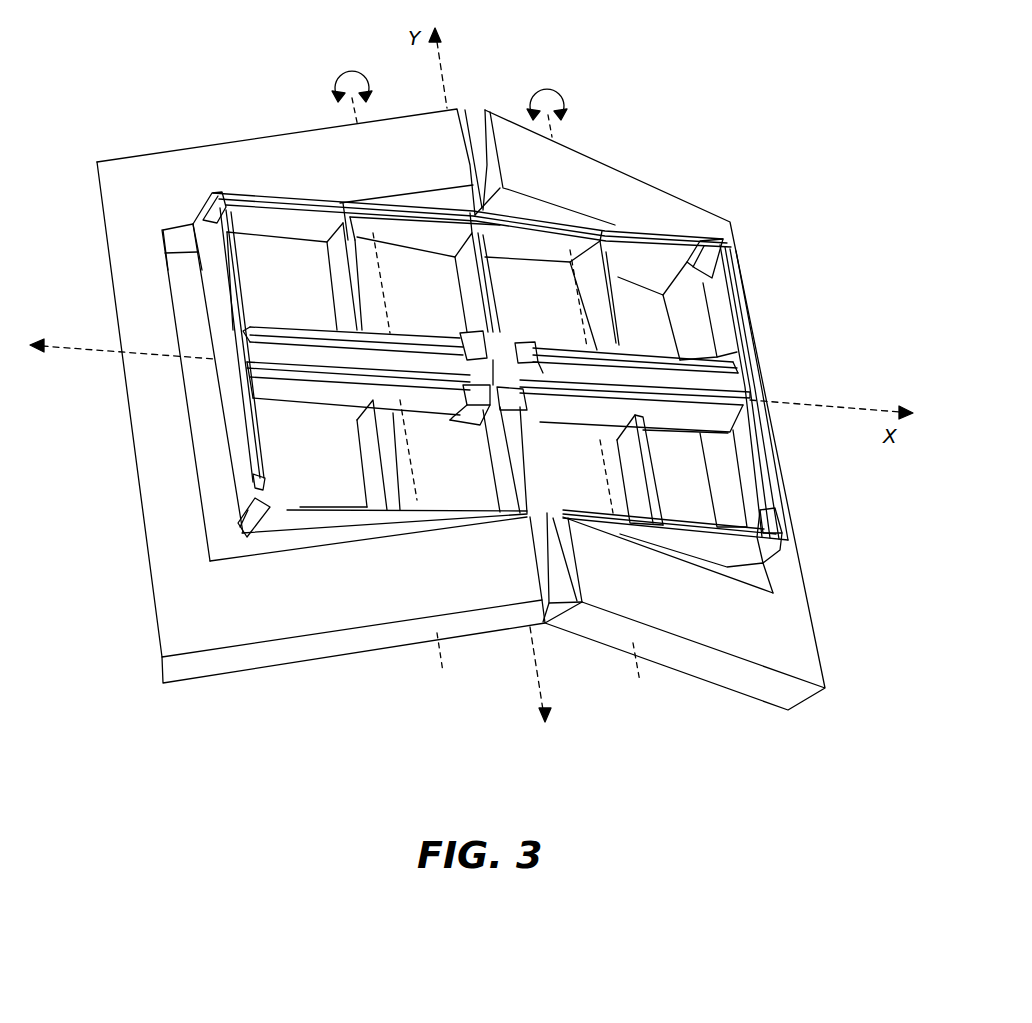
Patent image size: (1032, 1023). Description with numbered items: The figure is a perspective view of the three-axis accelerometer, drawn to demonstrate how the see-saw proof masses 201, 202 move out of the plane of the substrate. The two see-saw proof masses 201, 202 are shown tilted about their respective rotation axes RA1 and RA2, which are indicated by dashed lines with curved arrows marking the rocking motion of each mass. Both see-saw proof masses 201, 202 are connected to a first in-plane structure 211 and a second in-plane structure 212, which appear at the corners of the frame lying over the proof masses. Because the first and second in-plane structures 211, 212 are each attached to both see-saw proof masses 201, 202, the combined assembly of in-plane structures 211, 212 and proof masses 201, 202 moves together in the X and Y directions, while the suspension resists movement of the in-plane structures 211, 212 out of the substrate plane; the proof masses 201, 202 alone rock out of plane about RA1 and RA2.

The see-saw proof mass 201 is at (250, 140).
The see-saw proof mass 202 is at (643, 177).
The first in-plane structure 211 is at (737, 260).
The second in-plane structure 212 is at (798, 553).
The first rotation axis RA1 is at (401, 388).
The second rotation axis RA2 is at (595, 402).